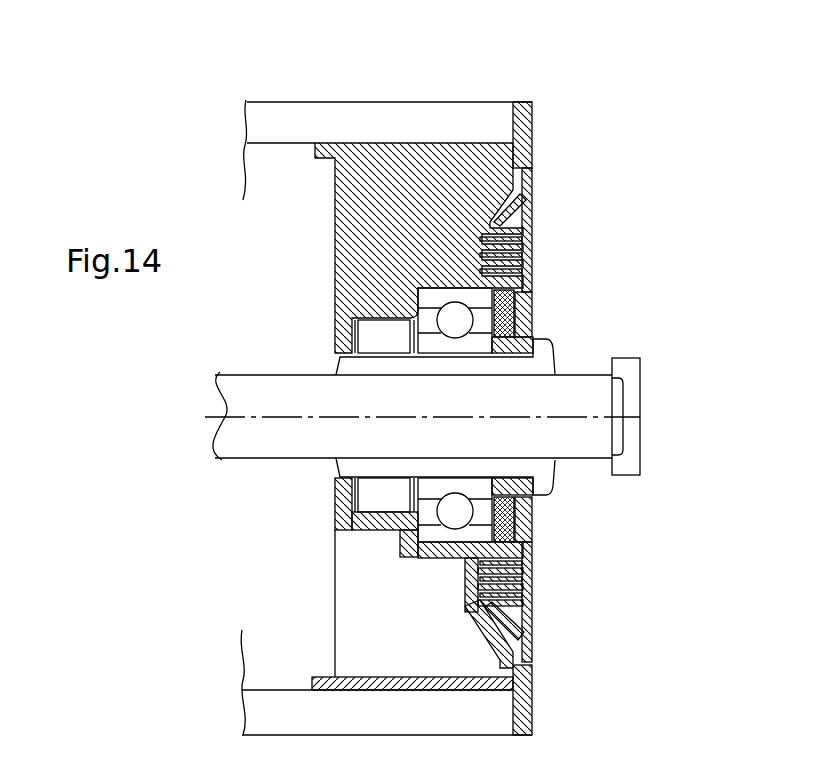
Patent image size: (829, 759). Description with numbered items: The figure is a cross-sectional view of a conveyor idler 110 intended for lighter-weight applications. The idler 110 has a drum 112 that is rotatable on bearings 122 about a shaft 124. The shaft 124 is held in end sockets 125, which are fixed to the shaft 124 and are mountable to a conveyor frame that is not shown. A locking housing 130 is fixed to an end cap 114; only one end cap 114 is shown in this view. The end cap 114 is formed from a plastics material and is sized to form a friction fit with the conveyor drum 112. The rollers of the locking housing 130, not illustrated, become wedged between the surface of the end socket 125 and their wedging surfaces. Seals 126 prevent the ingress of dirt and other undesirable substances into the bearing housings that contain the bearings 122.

The conveyor idler 110 is at (604, 101).
The drum 112 is at (395, 120).
The end cap 114 is at (495, 156).
The bearing 122 is at (482, 298).
The shaft 124 is at (518, 394).
The end socket 125 is at (628, 376).
The seal 126 is at (545, 262).
The locking housing 130 is at (382, 500).